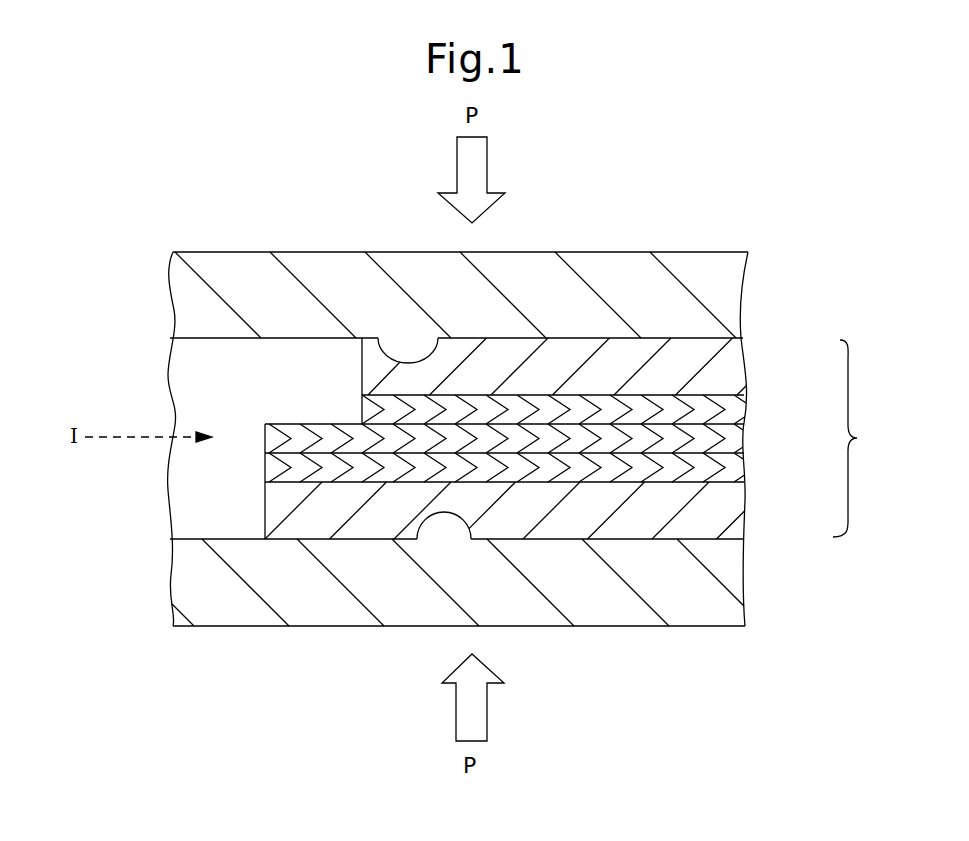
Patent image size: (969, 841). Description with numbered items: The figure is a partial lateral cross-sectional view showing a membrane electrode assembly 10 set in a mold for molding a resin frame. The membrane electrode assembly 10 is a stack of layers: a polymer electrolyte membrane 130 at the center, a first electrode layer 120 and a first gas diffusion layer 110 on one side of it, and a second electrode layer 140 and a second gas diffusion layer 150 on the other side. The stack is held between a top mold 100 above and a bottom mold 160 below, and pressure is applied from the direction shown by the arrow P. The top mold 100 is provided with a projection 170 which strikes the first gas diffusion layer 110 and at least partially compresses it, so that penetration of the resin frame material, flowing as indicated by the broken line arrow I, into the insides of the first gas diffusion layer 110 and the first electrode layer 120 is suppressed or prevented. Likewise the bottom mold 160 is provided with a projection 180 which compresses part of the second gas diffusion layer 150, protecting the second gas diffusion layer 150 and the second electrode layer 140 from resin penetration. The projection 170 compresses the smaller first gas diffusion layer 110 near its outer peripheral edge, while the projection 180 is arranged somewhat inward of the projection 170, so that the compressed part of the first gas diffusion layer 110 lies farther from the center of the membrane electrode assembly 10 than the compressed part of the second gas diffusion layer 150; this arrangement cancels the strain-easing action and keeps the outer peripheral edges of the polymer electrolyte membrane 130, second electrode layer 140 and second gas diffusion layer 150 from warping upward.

The membrane electrode assembly 10 is at (864, 438).
The top mold 100 is at (737, 292).
The first gas diffusion layer 110 is at (729, 373).
The first electrode layer 120 is at (740, 412).
The polymer electrolyte membrane 130 is at (732, 443).
The second electrode layer 140 is at (737, 470).
The second gas diffusion layer 150 is at (733, 523).
The bottom mold 160 is at (722, 588).
The projection 170 is at (405, 352).
The projection 180 is at (444, 532).